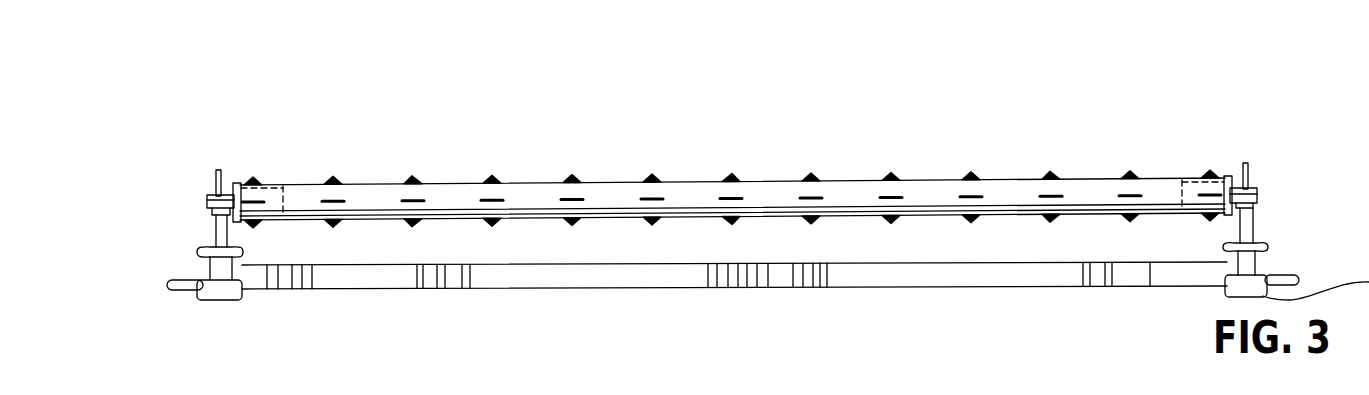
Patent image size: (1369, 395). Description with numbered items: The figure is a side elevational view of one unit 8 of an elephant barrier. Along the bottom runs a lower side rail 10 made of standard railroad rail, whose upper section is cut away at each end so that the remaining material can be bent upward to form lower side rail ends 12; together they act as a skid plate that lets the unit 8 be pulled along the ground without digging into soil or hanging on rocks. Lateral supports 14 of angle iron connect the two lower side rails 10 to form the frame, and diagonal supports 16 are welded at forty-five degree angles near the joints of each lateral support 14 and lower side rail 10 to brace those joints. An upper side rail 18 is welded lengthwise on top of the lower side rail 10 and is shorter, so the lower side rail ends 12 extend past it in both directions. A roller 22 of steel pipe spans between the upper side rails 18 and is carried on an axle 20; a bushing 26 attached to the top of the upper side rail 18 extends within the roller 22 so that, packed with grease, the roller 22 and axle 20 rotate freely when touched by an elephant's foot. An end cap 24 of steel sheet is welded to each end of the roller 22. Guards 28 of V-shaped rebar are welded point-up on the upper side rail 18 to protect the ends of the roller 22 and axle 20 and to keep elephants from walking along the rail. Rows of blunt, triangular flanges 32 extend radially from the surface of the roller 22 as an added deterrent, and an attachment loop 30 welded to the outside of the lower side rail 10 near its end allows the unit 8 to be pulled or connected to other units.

The unit 8 is at (227, 102).
The lower side rail 10 is at (210, 212).
The lower side rail end 12 is at (228, 291).
The lateral support 14 is at (363, 284).
The diagonal support 16 is at (302, 283).
The upper side rail 18 is at (212, 243).
The axle 20 is at (209, 196).
The roller 22 is at (385, 190).
The end cap 24 is at (238, 183).
The bushing 26 is at (283, 186).
The guard 28 is at (217, 171).
The attachment loop 30 is at (185, 284).
The flange 32 is at (737, 176).